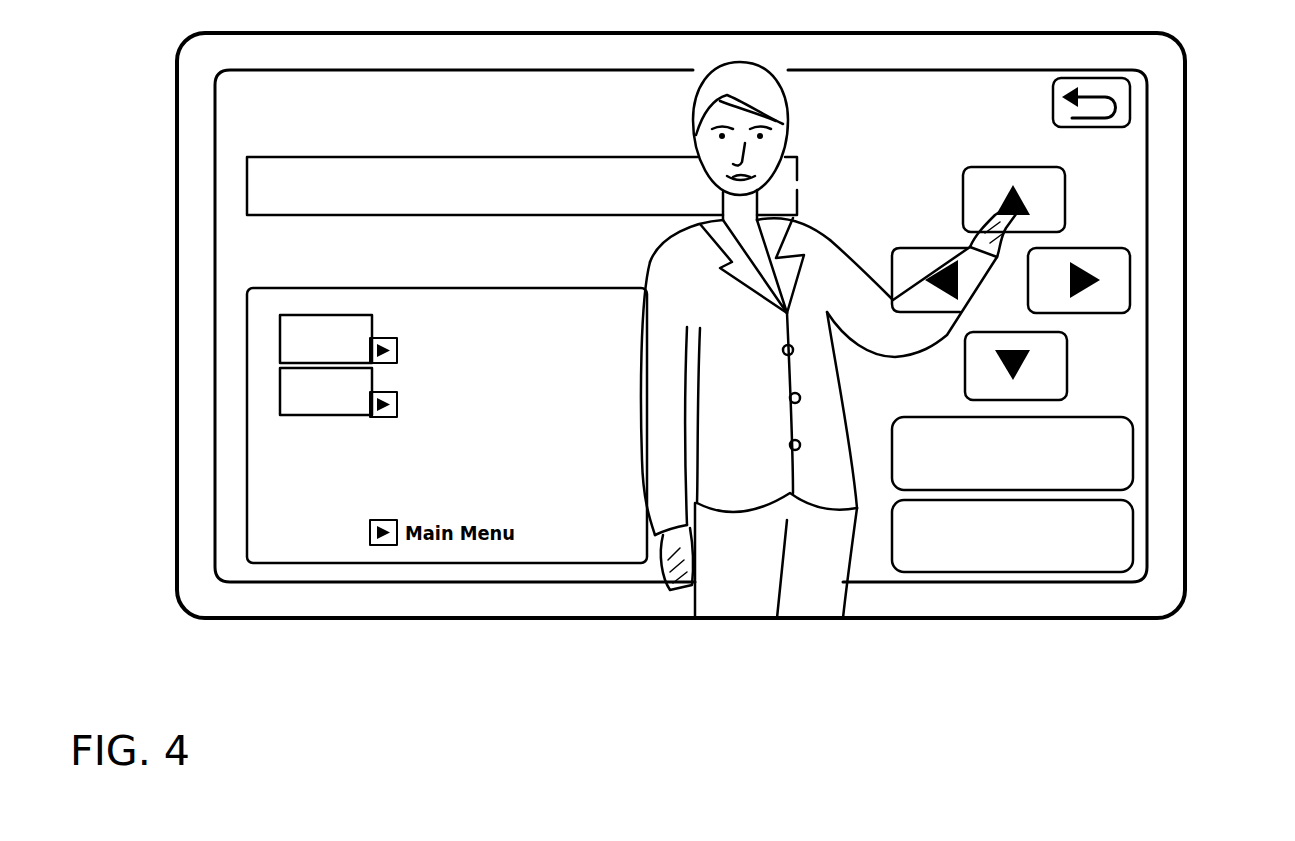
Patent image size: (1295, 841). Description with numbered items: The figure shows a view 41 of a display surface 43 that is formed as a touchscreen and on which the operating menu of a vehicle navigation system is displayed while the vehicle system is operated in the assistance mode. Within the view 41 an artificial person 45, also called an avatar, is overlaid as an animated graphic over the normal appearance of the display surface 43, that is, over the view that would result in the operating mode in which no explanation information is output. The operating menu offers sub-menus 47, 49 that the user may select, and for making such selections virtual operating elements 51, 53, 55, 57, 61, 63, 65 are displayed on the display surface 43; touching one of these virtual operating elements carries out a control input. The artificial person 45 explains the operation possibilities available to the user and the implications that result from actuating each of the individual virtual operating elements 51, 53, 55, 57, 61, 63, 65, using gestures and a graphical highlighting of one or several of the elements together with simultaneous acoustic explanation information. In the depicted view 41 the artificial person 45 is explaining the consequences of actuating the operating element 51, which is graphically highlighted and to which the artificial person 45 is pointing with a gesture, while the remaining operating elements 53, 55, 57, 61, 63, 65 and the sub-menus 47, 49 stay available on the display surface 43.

The view 41 is at (945, 618).
The display surface 43 is at (1127, 233).
The artificial person 45 is at (818, 603).
The sub-menu 47 is at (533, 368).
The sub-menu 49 is at (522, 427).
The virtual operating element 51 is at (1063, 192).
The virtual operating element 53 is at (1128, 288).
The virtual operating element 55 is at (987, 305).
The virtual operating element 57 is at (1063, 377).
The virtual operating element 61 is at (1123, 465).
The virtual operating element 63 is at (1123, 545).
The virtual operating element 65 is at (1127, 100).